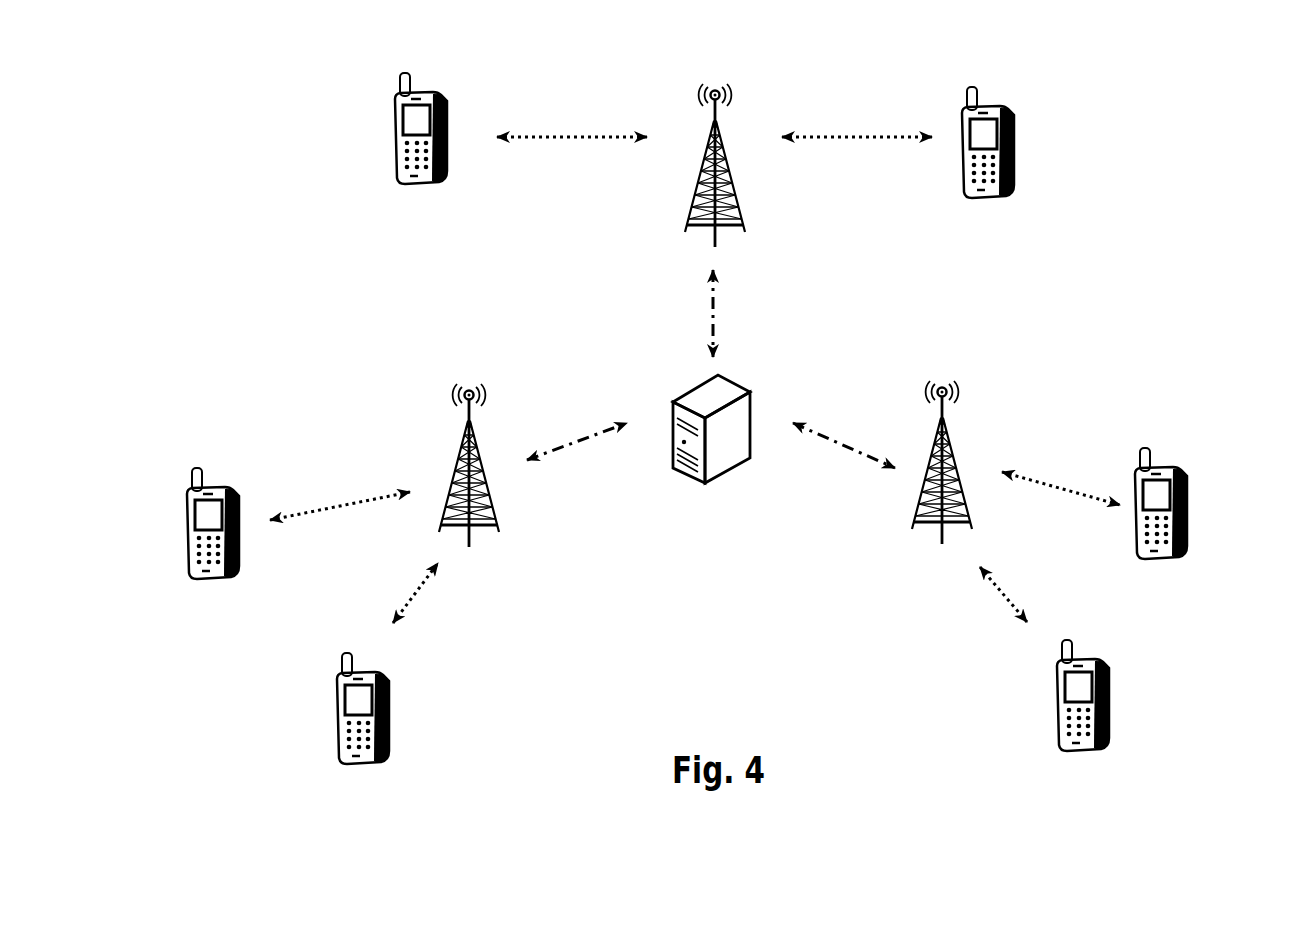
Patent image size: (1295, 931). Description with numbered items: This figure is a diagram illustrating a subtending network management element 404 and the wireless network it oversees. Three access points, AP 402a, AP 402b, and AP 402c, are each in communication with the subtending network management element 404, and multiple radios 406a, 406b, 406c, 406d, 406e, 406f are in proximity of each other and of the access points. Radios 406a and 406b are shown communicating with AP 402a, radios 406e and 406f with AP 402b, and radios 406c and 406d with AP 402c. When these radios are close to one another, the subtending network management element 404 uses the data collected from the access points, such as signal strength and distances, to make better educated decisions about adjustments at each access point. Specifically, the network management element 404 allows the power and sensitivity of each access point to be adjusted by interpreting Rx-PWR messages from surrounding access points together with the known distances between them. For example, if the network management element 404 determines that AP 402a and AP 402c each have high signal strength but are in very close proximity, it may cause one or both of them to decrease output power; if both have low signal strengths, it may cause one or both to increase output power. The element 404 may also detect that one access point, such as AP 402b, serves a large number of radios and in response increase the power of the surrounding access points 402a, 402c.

The access point 402a is at (506, 465).
The access point 402b is at (753, 166).
The access point 402c is at (980, 462).
The subtending network management element 404 is at (734, 437).
The radio 406a is at (248, 533).
The radio 406b is at (398, 724).
The radio 406c is at (1113, 712).
The radio 406d is at (1197, 511).
The radio 406e is at (1023, 150).
The radio 406f is at (455, 138).